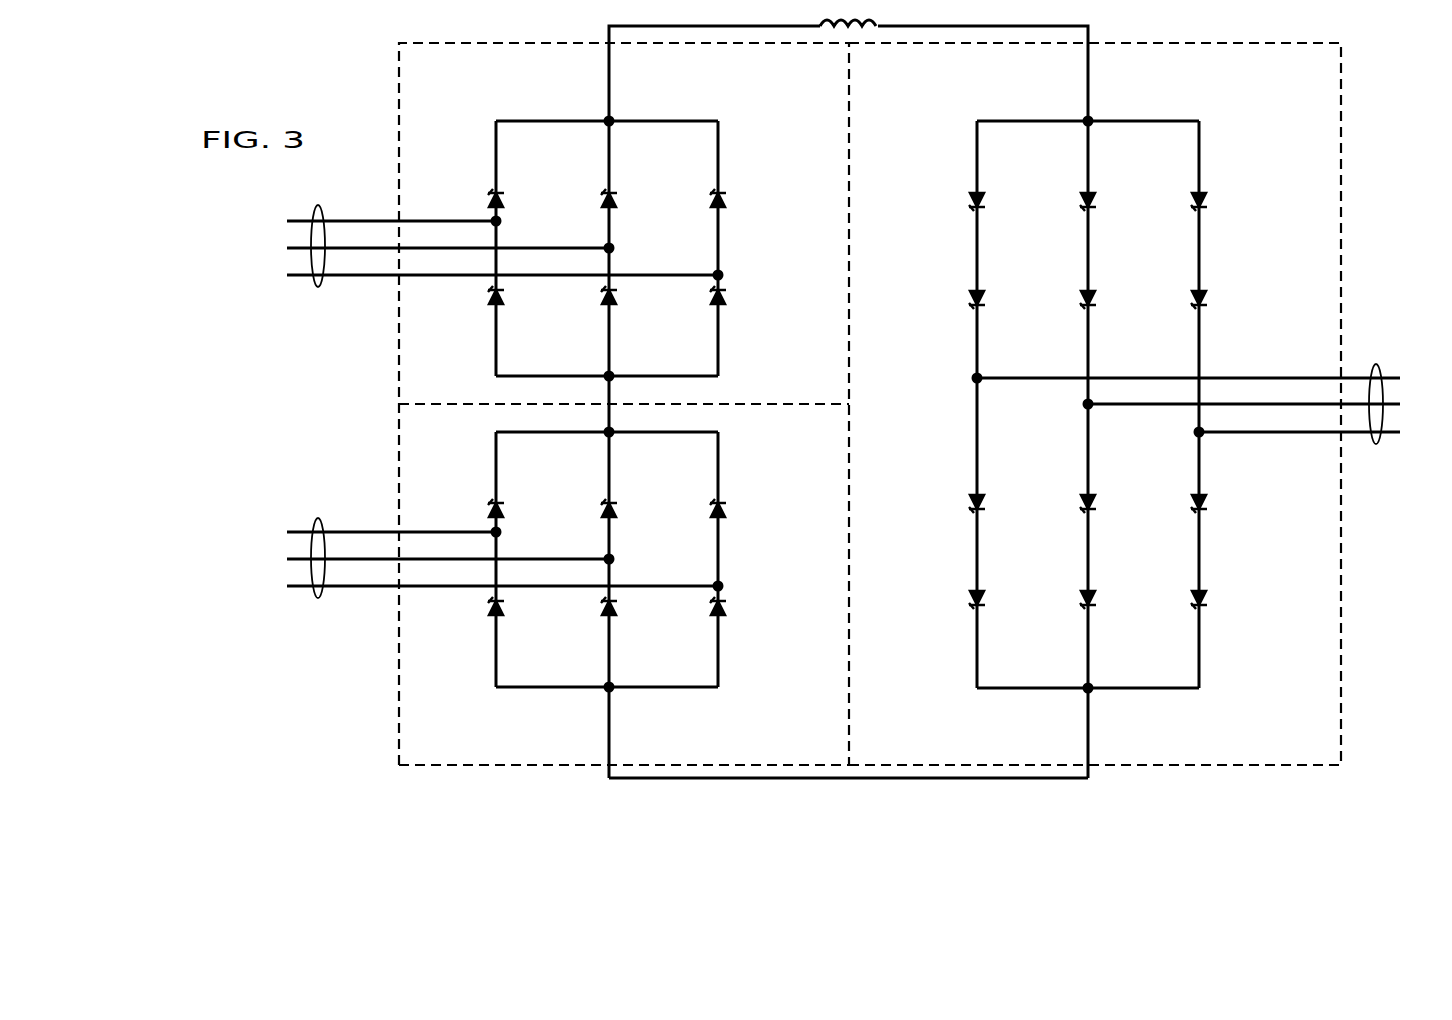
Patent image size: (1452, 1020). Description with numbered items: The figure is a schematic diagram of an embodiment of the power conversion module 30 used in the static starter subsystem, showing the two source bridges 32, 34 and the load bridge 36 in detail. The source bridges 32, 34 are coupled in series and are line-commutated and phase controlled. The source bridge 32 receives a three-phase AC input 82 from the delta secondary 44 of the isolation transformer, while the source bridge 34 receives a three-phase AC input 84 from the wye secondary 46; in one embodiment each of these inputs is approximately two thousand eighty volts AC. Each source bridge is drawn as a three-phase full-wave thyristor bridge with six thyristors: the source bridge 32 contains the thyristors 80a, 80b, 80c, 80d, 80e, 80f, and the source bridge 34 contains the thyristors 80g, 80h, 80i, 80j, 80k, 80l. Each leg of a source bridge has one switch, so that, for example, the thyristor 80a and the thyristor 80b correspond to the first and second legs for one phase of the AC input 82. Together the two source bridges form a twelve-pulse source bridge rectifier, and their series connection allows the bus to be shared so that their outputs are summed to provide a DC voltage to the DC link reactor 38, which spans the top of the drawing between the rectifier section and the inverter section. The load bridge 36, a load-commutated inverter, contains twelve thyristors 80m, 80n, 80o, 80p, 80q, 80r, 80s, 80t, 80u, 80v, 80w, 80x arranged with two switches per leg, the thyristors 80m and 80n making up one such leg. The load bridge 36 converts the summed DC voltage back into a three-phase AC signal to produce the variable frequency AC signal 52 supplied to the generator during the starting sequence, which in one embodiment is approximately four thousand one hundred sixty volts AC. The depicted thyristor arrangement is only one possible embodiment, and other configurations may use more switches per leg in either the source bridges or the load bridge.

The power conversion module 30 is at (364, 104).
The source bridge 32 is at (421, 44).
The source bridge 34 is at (399, 736).
The load bridge 36 is at (1268, 44).
The DC link reactor 38 is at (886, 21).
The delta secondary 44 is at (226, 249).
The wye secondary 46 is at (226, 560).
The variable frequency AC signal 52 is at (1376, 444).
The three-phase AC input 82 is at (318, 287).
The three-phase AC input 84 is at (318, 598).
The thyristor 80a is at (505, 201).
The thyristor 80b is at (504, 296).
The thyristor 80c is at (618, 201).
The thyristor 80d is at (617, 296).
The thyristor 80e is at (727, 201).
The thyristor 80f is at (726, 296).
The thyristor 80g is at (505, 511).
The thyristor 80h is at (504, 607).
The thyristor 80i is at (618, 511).
The thyristor 80j is at (617, 607).
The thyristor 80k is at (727, 511).
The thyristor 80l is at (726, 607).
The thyristor 80m is at (985, 201).
The thyristor 80n is at (985, 299).
The thyristor 80o is at (985, 503).
The thyristor 80p is at (985, 599).
The thyristor 80q is at (1096, 201).
The thyristor 80r is at (1096, 299).
The thyristor 80s is at (1096, 503).
The thyristor 80t is at (1096, 599).
The thyristor 80u is at (1207, 201).
The thyristor 80v is at (1207, 299).
The thyristor 80w is at (1207, 503).
The thyristor 80x is at (1207, 599).